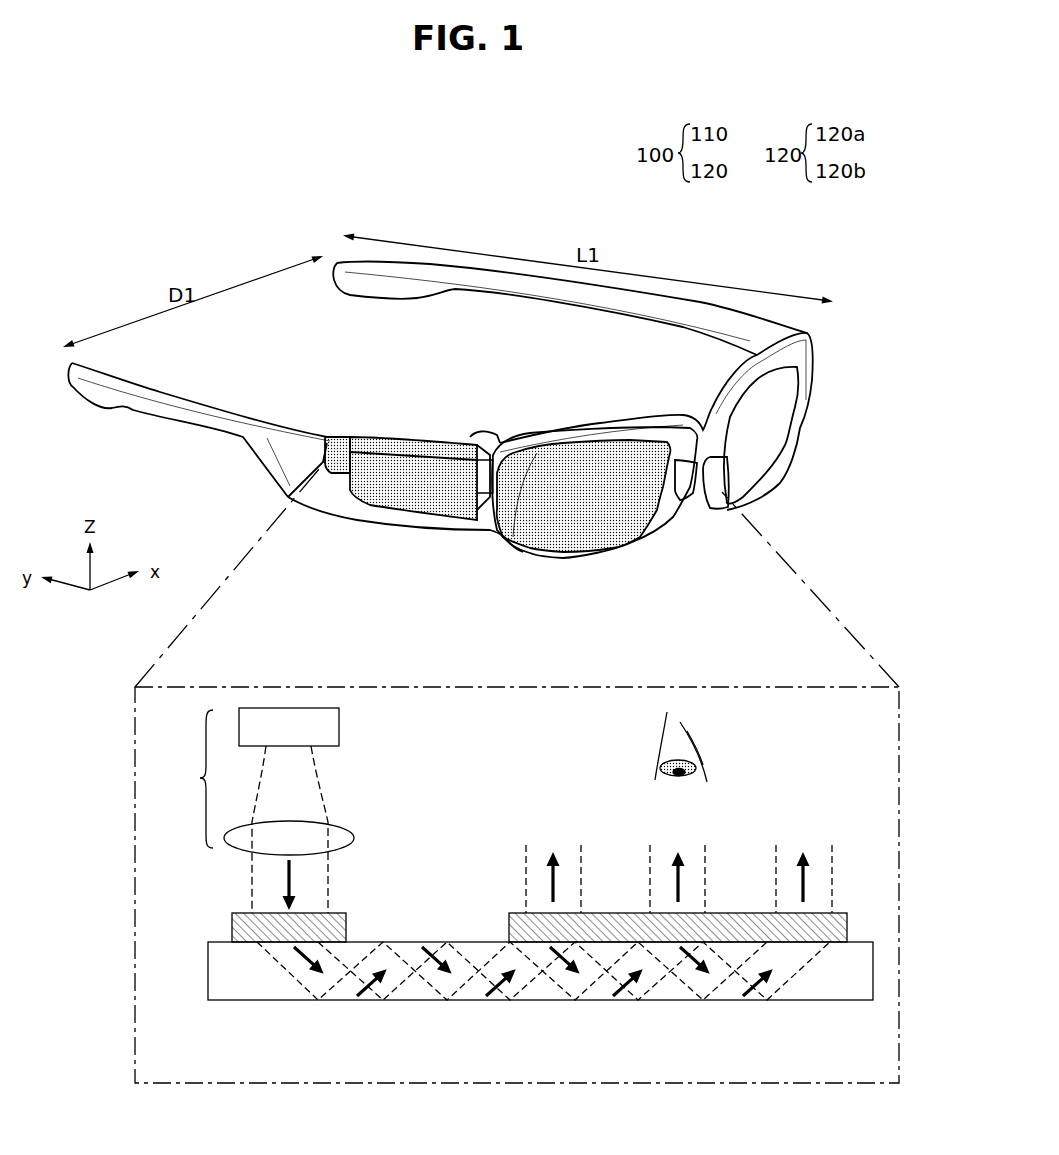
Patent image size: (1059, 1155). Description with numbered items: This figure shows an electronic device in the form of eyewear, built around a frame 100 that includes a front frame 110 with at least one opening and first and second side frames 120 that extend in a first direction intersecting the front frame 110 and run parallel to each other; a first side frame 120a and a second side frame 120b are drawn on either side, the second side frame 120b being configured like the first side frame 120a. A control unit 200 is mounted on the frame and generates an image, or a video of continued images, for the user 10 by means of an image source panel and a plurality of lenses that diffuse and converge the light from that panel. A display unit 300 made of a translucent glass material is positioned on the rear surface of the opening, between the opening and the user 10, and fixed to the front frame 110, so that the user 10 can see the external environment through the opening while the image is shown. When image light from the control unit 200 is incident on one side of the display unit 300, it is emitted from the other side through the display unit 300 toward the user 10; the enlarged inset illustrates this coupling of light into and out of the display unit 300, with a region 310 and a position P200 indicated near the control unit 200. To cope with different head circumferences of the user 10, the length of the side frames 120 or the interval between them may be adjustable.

The frame 100 is at (470, 663).
The front frame 110 is at (703, 423).
The first and second side frames 120 is at (437, 379).
The first side frame 120a is at (163, 425).
The second side frame 120b is at (372, 292).
The control unit 200 is at (434, 505).
The display unit 300 is at (584, 536).
The input coupler portion 310 is at (486, 430).
The module position P200 is at (493, 460).
The user 10 is at (700, 748).